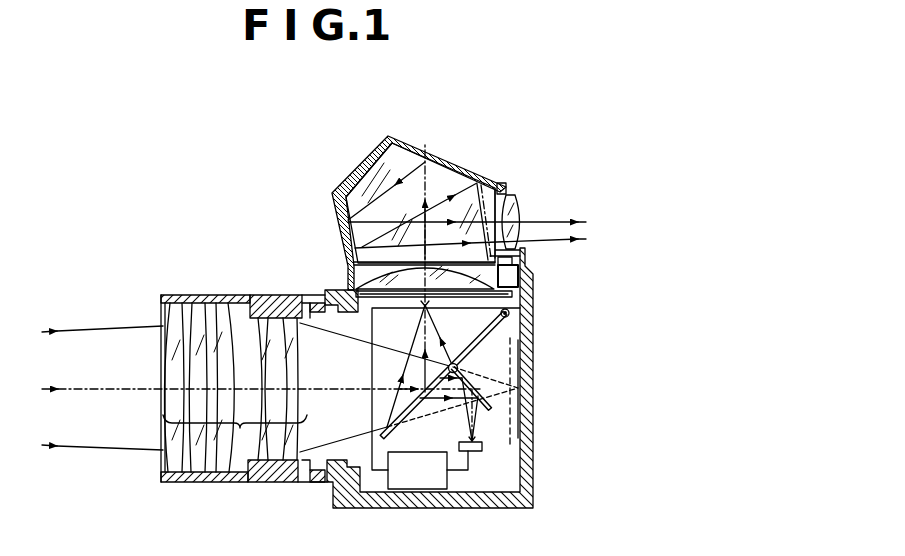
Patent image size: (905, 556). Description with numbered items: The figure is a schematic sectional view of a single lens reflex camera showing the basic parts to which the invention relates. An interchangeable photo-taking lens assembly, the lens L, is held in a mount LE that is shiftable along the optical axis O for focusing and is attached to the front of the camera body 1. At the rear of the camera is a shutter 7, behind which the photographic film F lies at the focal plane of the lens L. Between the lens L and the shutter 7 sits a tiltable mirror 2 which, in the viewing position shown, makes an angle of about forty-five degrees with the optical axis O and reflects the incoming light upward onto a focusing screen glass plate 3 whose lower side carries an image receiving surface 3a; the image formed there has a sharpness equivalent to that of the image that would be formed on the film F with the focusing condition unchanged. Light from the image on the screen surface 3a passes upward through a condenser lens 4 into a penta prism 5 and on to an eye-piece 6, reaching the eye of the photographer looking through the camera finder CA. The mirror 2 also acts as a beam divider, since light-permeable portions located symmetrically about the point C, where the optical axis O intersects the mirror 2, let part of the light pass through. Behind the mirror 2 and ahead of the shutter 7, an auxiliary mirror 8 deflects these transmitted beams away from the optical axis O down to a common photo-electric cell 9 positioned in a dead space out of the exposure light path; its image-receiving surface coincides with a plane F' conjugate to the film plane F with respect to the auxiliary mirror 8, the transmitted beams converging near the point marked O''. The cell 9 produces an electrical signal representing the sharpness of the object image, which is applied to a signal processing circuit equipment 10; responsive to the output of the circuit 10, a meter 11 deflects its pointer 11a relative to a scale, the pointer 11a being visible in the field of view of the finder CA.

The camera body 1 is at (305, 316).
The tiltable mirror 2 is at (477, 343).
The focusing screen glass plate 3 is at (372, 298).
The image receiving surface 3a is at (404, 303).
The condenser lens 4 is at (365, 285).
The penta prism 5 is at (441, 180).
The eye-piece 6 is at (521, 204).
The shutter 7 is at (510, 343).
The auxiliary mirror 8 is at (479, 390).
The photo-electric cell 9 is at (481, 448).
The signal processing circuit equipment 10 is at (404, 484).
The meter 11 is at (510, 278).
The pointer 11a is at (520, 260).
The mount LE is at (230, 283).
The camera finder CA is at (486, 172).
The lens L is at (240, 428).
The optical axis O is at (261, 414).
The point C is at (421, 385).
The photographic film F is at (474, 389).
The plane conjugate to the film plane F' is at (431, 437).
The secondary image point O'' is at (489, 425).